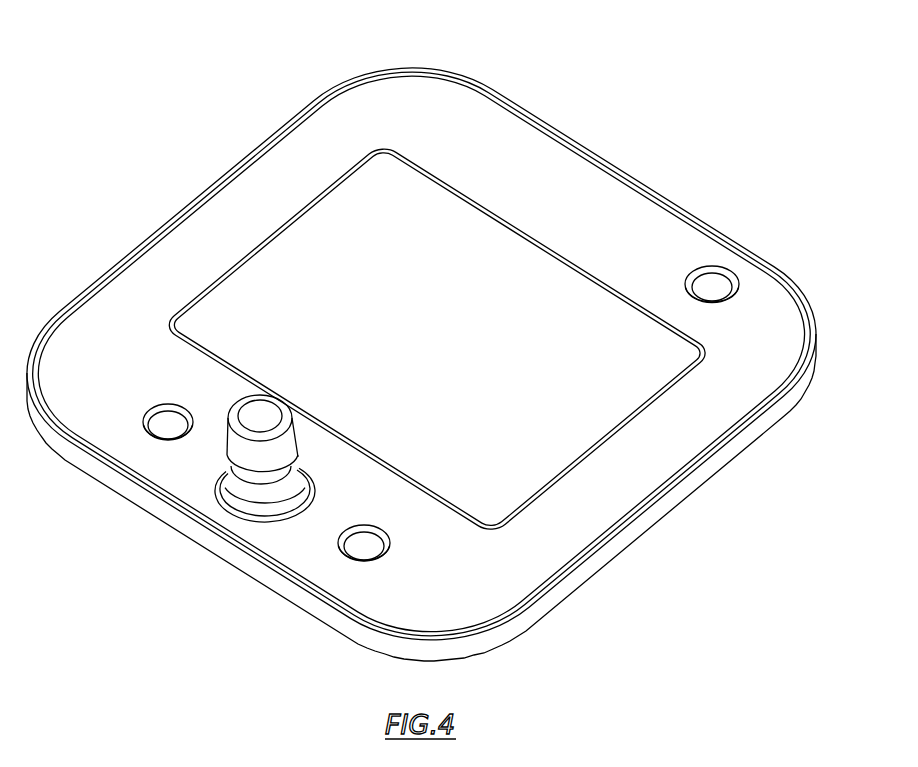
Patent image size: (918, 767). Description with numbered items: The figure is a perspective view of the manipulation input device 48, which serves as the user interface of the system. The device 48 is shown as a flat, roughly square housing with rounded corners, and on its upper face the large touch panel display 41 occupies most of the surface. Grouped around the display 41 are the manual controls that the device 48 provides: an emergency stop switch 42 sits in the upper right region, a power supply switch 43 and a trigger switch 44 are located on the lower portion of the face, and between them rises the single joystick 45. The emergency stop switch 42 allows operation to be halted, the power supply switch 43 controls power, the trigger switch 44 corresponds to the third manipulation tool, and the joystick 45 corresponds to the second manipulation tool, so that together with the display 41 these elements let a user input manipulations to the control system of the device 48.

The manipulation input device 48 is at (255, 155).
The touch panel display 41 is at (257, 300).
The emergency stop switch 42 is at (714, 286).
The power supply switch 43 is at (361, 552).
The trigger switch 44 is at (165, 425).
The single joystick 45 is at (248, 455).